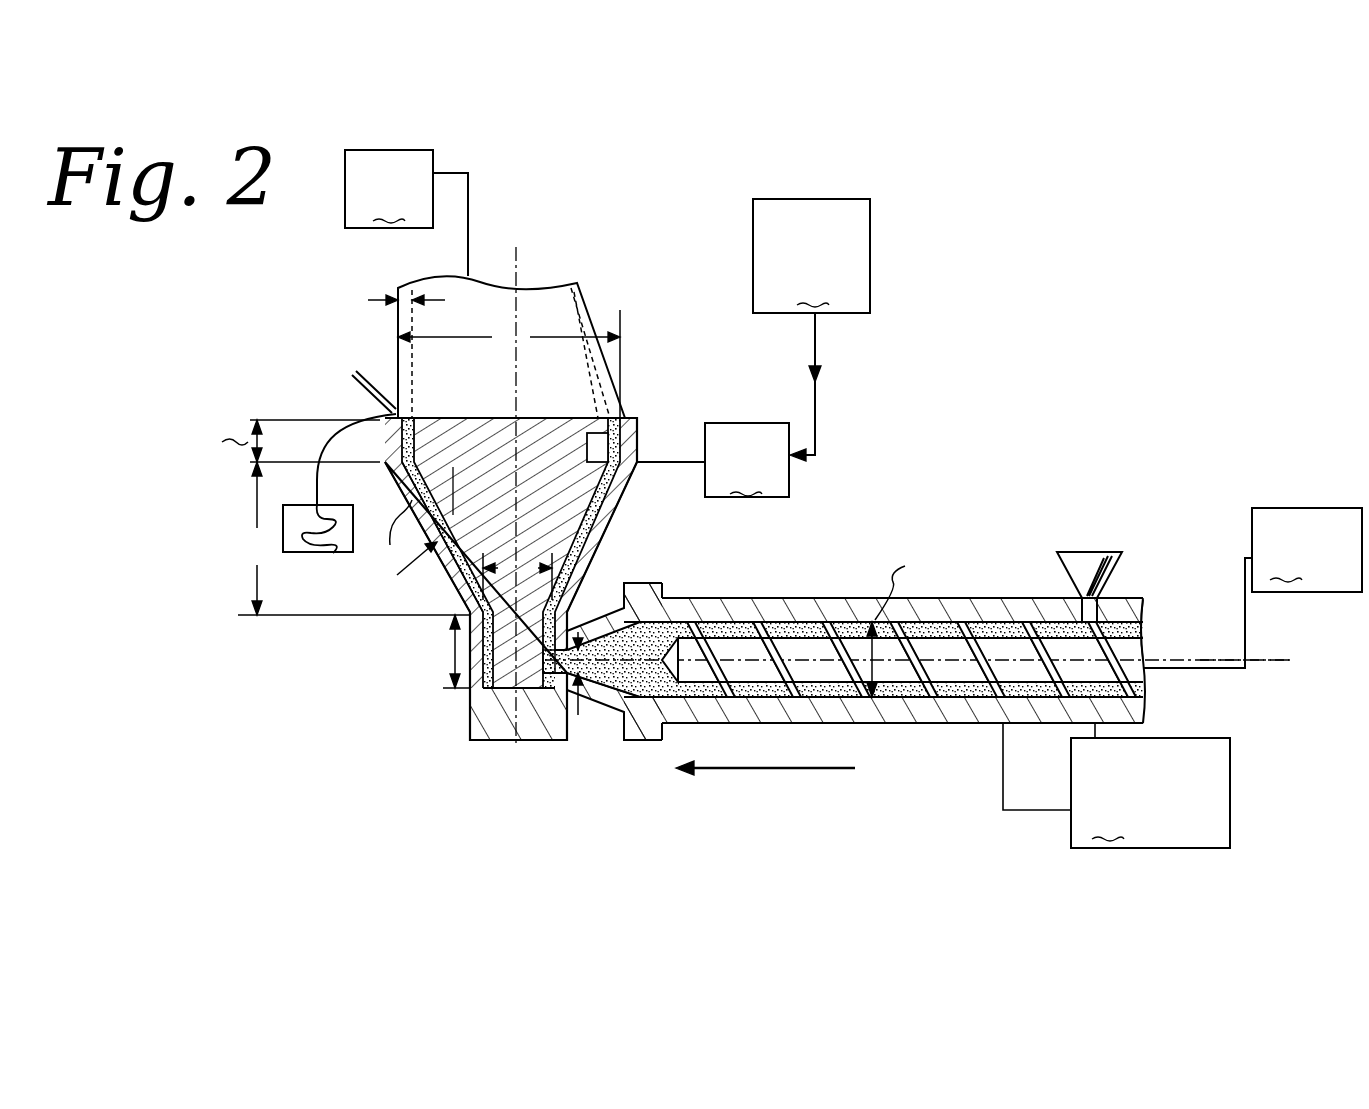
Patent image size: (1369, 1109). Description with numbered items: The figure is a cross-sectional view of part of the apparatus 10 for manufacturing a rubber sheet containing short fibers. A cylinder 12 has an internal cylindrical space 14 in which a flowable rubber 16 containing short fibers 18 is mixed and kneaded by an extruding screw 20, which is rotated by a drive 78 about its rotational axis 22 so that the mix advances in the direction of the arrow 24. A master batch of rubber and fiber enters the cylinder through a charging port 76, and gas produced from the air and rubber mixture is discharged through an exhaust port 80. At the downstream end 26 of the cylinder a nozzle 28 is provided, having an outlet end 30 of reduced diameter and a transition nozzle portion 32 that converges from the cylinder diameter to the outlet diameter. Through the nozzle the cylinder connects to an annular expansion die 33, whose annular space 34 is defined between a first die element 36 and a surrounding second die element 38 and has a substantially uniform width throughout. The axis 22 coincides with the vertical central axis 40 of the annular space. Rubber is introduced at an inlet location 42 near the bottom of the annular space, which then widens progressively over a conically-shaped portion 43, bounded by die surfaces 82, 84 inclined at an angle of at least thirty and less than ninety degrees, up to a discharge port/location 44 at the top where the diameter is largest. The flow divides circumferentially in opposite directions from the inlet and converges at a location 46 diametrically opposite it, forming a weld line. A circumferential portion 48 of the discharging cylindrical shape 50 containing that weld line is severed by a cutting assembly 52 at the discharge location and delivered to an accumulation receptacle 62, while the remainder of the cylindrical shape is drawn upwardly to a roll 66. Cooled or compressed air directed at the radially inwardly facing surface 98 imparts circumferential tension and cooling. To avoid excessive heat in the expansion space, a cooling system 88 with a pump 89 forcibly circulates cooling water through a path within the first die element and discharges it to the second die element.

The apparatus 10 is at (850, 422).
The cylinder 12 is at (927, 598).
The internal cylindrical space 14 is at (961, 723).
The flowable rubber 16 is at (1140, 628).
The short fibers 18 is at (674, 628).
The extruding screw 20 is at (1087, 667).
The rotational axis 22 is at (1290, 662).
The arrow 24 is at (760, 768).
The downstream end 26 is at (643, 575).
The nozzle 28 is at (598, 640).
The outlet end 30 is at (543, 688).
The transition nozzle portion 32 is at (631, 698).
The annular expansion die 33 is at (653, 447).
The annular space 34 is at (608, 514).
The first die element 36 is at (542, 495).
The second die element 38 is at (447, 575).
The central axis 40 is at (515, 273).
The inlet location 42 is at (470, 740).
The conically-shaped portion 43 is at (455, 532).
The discharge port/location 44 is at (403, 414).
The location diametrically opposite inlet 46 is at (548, 664).
The circumferential portion 48 is at (285, 532).
The cylindrical shape 50 is at (522, 402).
The cutting assembly 52 is at (378, 385).
The accumulation receptacle 62 is at (313, 552).
The roll 66 is at (406, 213).
The charging port 76 is at (1092, 552).
The drive 78 is at (1252, 588).
The exhaust port 80 is at (1150, 793).
The die surface 82 is at (442, 567).
The die surface 84 is at (607, 433).
The cooling system 88 is at (811, 330).
The pump 89 is at (713, 460).
The radially inwardly facing surface 98 is at (578, 347).